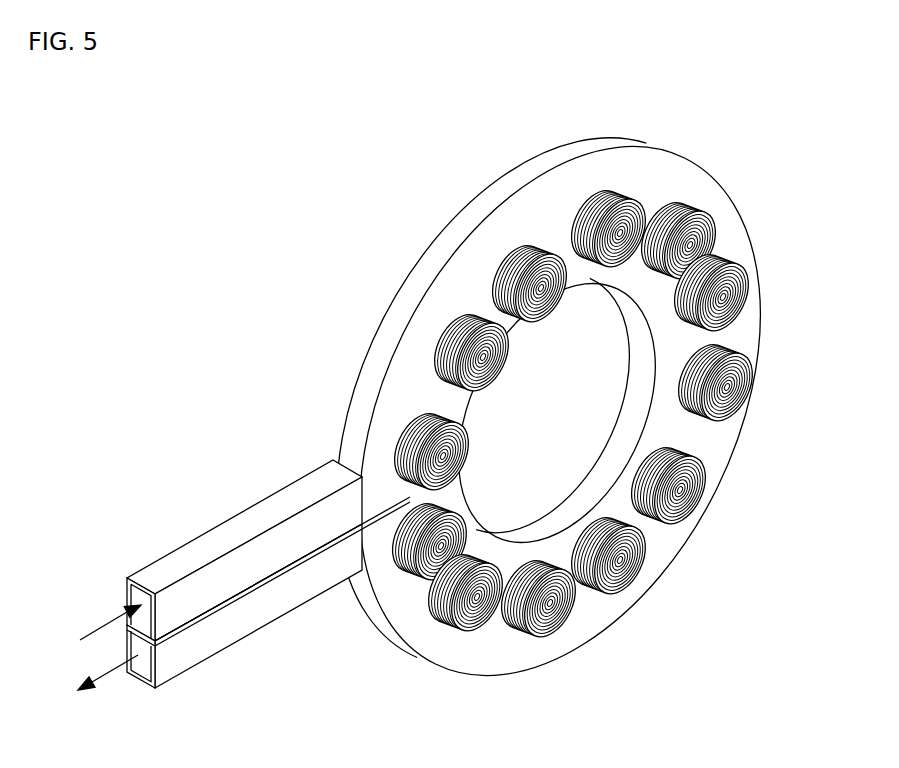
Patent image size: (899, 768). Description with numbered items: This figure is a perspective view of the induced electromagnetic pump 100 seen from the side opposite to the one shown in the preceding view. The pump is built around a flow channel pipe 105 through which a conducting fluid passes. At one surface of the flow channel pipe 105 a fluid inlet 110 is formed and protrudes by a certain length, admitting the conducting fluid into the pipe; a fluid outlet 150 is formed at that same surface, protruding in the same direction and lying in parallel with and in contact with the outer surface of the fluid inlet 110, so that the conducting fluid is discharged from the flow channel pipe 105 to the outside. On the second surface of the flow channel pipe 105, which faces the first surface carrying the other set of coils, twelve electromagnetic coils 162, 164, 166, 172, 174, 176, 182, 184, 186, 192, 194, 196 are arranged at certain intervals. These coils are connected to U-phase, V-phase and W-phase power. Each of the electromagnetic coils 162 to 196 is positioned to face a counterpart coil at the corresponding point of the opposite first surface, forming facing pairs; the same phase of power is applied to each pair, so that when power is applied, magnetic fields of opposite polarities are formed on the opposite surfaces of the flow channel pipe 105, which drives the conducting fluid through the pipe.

The induced electromagnetic pump 100 is at (84, 112).
The flow channel pipe 105 is at (433, 270).
The fluid inlet 110 is at (137, 596).
The fluid outlet 150 is at (147, 674).
The electromagnetic coil 162 is at (396, 446).
The electromagnetic coil 164 is at (418, 350).
The electromagnetic coil 166 is at (520, 237).
The electromagnetic coil 172 is at (605, 183).
The electromagnetic coil 174 is at (683, 190).
The electromagnetic coil 176 is at (733, 251).
The electromagnetic coil 182 is at (740, 370).
The electromagnetic coil 184 is at (712, 482).
The electromagnetic coil 186 is at (645, 577).
The electromagnetic coil 192 is at (557, 628).
The electromagnetic coil 194 is at (477, 637).
The electromagnetic coil 196 is at (410, 587).